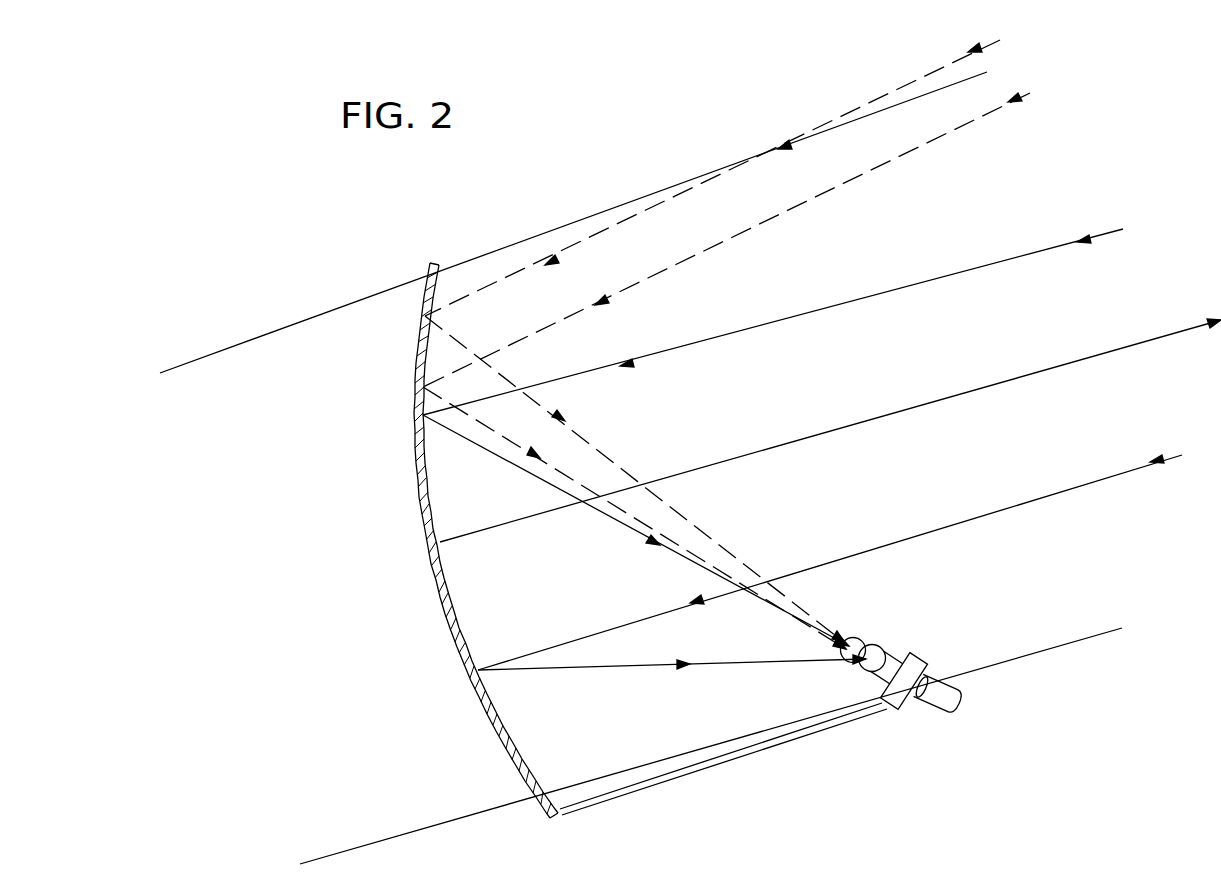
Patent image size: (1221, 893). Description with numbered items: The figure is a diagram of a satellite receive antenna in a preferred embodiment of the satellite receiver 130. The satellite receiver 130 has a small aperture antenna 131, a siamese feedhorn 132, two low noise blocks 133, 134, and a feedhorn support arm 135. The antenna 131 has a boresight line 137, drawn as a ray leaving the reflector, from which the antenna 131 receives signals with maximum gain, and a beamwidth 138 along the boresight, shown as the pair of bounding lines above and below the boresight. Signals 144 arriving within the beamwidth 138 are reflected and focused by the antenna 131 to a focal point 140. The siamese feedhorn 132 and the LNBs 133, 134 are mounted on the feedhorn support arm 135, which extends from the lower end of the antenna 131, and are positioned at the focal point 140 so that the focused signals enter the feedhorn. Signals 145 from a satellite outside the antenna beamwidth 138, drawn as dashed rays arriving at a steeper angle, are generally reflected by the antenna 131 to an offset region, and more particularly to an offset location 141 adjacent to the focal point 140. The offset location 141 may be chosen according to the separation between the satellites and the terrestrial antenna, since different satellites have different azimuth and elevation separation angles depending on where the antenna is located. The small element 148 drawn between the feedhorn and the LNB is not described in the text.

The satellite receiver 130 is at (673, 529).
The small aperture antenna 131 is at (423, 312).
The siamese feedhorn 132 is at (896, 667).
The low noise block 133 is at (938, 693).
The low noise block 134 is at (904, 681).
The feedhorn support arm 135 is at (688, 777).
The boresight line 137 is at (986, 384).
The beamwidth 138 is at (230, 362).
The focal point 140 is at (872, 658).
The offset location 141 is at (853, 650).
The signals 144 is at (865, 552).
The signals 145 is at (847, 183).
The coupler 148 is at (922, 686).